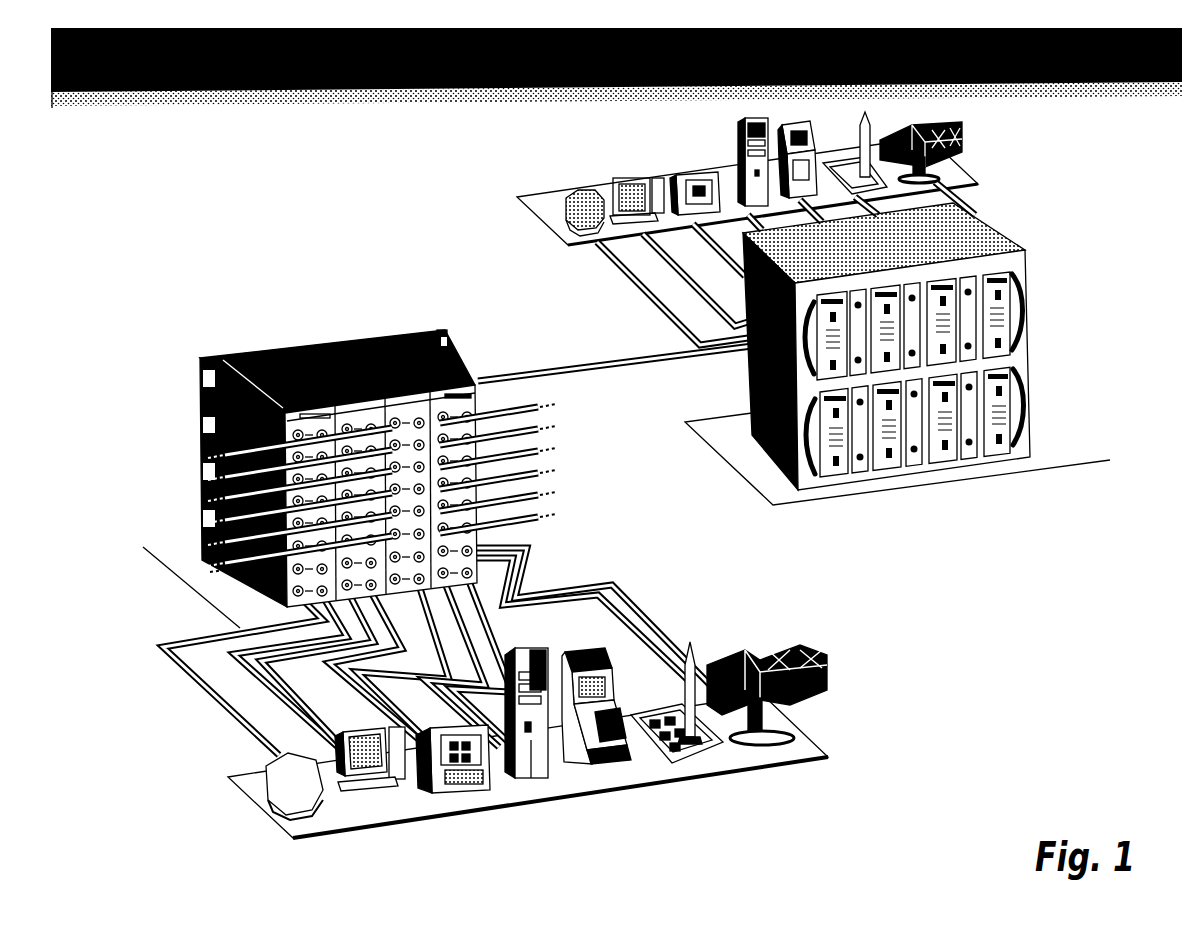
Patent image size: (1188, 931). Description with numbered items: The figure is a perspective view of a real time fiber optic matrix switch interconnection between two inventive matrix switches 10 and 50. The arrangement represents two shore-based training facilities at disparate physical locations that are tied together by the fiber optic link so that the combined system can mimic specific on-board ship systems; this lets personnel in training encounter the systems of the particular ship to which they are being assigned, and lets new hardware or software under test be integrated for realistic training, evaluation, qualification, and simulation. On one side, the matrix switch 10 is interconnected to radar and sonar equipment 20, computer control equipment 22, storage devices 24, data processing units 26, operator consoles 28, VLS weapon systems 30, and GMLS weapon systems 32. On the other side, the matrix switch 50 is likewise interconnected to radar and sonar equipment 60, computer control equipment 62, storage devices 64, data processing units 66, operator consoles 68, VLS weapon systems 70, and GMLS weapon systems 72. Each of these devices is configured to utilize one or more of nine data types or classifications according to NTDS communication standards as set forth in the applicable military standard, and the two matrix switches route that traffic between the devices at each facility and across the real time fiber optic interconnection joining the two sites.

The matrix switch 10 is at (298, 362).
The radar and sonar equipment 20 is at (300, 813).
The computer control equipment 22 is at (368, 800).
The storage devices 24 is at (463, 790).
The data processing units 26 is at (533, 778).
The operator consoles 28 is at (600, 760).
The VLS weapon systems 30 is at (693, 760).
The GMLS weapon systems 32 is at (770, 743).
The matrix switch 50 is at (930, 463).
The radar and sonar equipment 60 is at (577, 195).
The computer control equipment 62 is at (627, 180).
The storage devices 64 is at (687, 173).
The data processing units 66 is at (745, 128).
The operator consoles 68 is at (790, 125).
The VLS weapon systems 70 is at (855, 152).
The GMLS weapon systems 72 is at (920, 130).